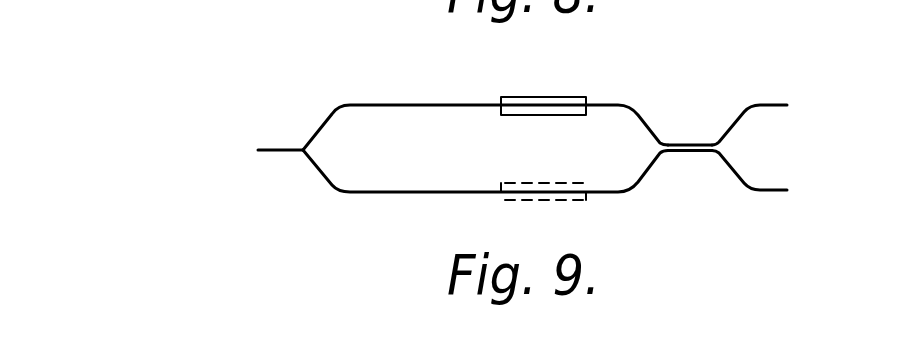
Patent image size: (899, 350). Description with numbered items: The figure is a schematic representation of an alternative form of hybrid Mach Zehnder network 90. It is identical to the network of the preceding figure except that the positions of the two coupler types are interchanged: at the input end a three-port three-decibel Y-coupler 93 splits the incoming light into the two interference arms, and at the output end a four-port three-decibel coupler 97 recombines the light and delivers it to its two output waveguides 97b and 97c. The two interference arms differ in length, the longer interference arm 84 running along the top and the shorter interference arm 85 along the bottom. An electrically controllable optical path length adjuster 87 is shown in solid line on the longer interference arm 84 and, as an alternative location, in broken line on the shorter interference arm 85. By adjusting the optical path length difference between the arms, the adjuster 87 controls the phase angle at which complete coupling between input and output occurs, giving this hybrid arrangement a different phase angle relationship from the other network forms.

The interference arm 84 is at (455, 103).
The interference arm 85 is at (425, 192).
The electrically controllable optical path length adjuster 87 is at (560, 97).
The hybrid Mach Zehnder network 90 is at (485, 157).
The 3-port 3 dB coupler 93 is at (317, 151).
The directional coupler 97 is at (690, 150).
The first output waveguide 97b is at (773, 105).
The second output waveguide 97c is at (776, 190).